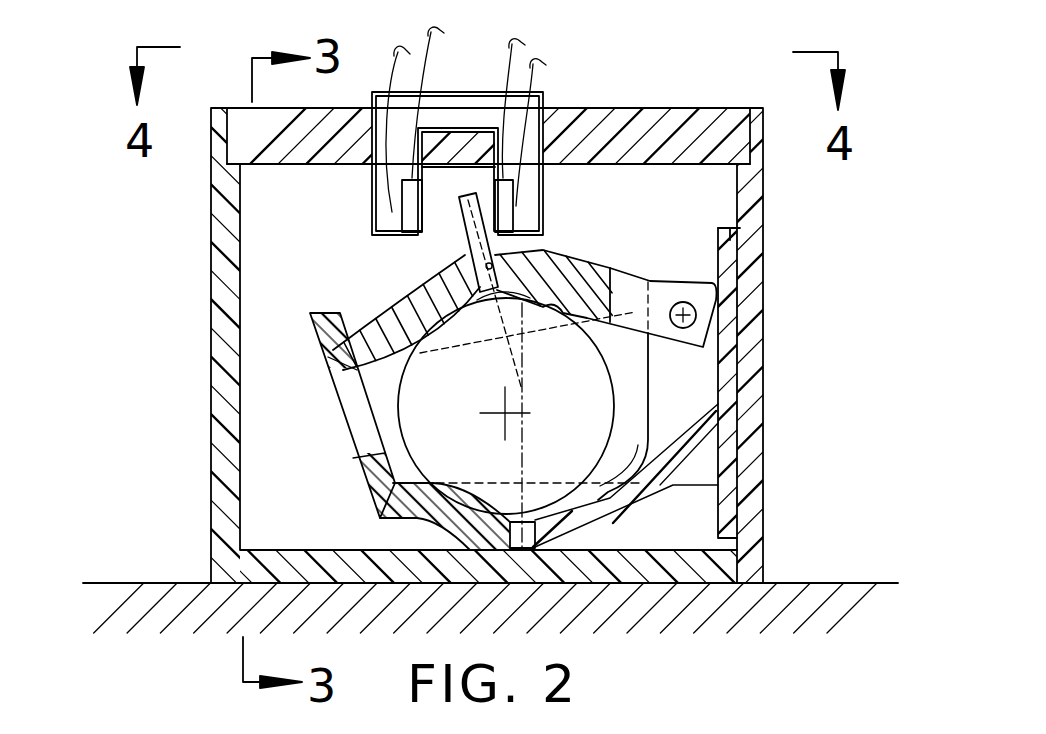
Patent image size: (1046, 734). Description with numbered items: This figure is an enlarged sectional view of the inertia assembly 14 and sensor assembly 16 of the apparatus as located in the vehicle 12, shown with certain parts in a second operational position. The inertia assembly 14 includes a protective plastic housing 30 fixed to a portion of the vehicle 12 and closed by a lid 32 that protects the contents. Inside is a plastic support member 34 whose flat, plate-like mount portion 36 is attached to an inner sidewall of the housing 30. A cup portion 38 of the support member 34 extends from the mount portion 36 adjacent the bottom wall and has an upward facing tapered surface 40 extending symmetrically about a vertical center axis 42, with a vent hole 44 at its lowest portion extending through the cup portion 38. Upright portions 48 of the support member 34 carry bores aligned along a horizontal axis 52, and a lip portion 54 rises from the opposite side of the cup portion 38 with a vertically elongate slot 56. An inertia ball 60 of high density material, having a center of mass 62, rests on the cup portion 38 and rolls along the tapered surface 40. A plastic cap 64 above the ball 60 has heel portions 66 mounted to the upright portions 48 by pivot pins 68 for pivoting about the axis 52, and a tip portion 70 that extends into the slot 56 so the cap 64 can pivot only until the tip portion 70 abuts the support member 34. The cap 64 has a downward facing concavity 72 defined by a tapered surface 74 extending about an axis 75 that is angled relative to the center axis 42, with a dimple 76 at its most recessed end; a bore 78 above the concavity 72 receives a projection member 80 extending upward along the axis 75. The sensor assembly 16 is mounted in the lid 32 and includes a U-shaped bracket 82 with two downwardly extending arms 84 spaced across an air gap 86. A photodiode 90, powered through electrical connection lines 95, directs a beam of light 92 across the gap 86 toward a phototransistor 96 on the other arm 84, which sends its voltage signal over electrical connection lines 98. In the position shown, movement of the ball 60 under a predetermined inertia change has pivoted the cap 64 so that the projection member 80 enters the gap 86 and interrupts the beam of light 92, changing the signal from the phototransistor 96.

The vehicle 12 is at (156, 575).
The inertia assembly 14 is at (170, 238).
The sensor assembly 16 is at (480, 200).
The housing 30 is at (212, 307).
The lid 32 is at (667, 128).
The support member 34 is at (415, 516).
The mount portion 36 is at (718, 229).
The cup portion 38 is at (612, 527).
The tapered surface 40 is at (604, 492).
The center axis 42 is at (524, 436).
The vent hole 44 is at (500, 547).
The upright portions 48 is at (708, 281).
The horizontal axis 52 is at (678, 329).
The lip portion 54 is at (325, 327).
The vertical slot 56 is at (337, 418).
The inertia ball 60 is at (522, 423).
The center of mass 62 is at (496, 419).
The cap 64 is at (597, 305).
The heel portions 66 is at (626, 293).
The pivot pins 68 is at (693, 329).
The tip portion 70 is at (364, 340).
The concavity 72 is at (574, 329).
The tapered surface 74 is at (556, 248).
The axis 75 is at (497, 342).
The dimple 76 is at (468, 350).
The bore 78 is at (494, 267).
The projection member 80 is at (465, 259).
The bracket 82 is at (463, 105).
The arms 84 is at (372, 180).
The air gap 86 is at (428, 243).
The photodiode 90 is at (483, 202).
The beam of light 92 is at (460, 199).
The electrical connection lines 95 is at (520, 50).
The phototransistor 96 is at (415, 237).
The electrical connection lines 98 is at (398, 28).